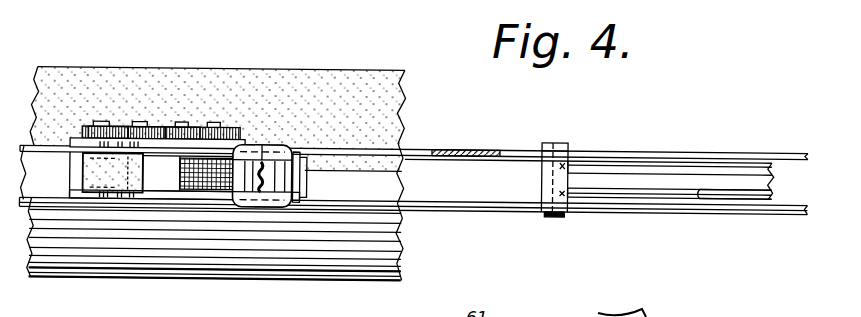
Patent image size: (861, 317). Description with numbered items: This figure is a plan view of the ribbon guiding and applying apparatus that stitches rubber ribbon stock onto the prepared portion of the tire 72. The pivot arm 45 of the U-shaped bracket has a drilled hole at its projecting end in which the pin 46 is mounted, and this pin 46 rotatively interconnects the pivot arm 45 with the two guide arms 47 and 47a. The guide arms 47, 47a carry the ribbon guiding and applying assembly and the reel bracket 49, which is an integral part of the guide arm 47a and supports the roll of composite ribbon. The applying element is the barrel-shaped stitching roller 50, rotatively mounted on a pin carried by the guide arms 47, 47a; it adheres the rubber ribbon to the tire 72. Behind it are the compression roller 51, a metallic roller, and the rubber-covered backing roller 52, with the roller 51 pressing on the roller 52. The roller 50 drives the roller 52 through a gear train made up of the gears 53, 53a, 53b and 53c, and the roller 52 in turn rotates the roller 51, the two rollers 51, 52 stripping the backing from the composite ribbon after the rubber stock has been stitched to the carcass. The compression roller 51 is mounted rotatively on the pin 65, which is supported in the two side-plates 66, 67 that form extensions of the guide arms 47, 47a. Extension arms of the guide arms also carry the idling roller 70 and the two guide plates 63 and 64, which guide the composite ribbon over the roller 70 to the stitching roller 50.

The pivot arm 45 is at (727, 193).
The pin 46 is at (567, 138).
The guide arm 47 is at (405, 204).
The guide arm 47a is at (403, 110).
The reel bracket 49 is at (458, 141).
The stitching roller 50 is at (198, 190).
The compression roller 51 is at (102, 172).
The backing roller 52 is at (70, 129).
The gear 53 is at (230, 128).
The gear 53a is at (192, 128).
The gear 53b is at (152, 128).
The gear 53c is at (114, 128).
The guide plate 63 is at (258, 146).
The guide plate 64 is at (270, 205).
The pin 65 is at (97, 122).
The side-plate 66 is at (157, 148).
The side-plate 67 is at (150, 200).
The idling roller 70 is at (300, 179).
The tire 72 is at (298, 78).